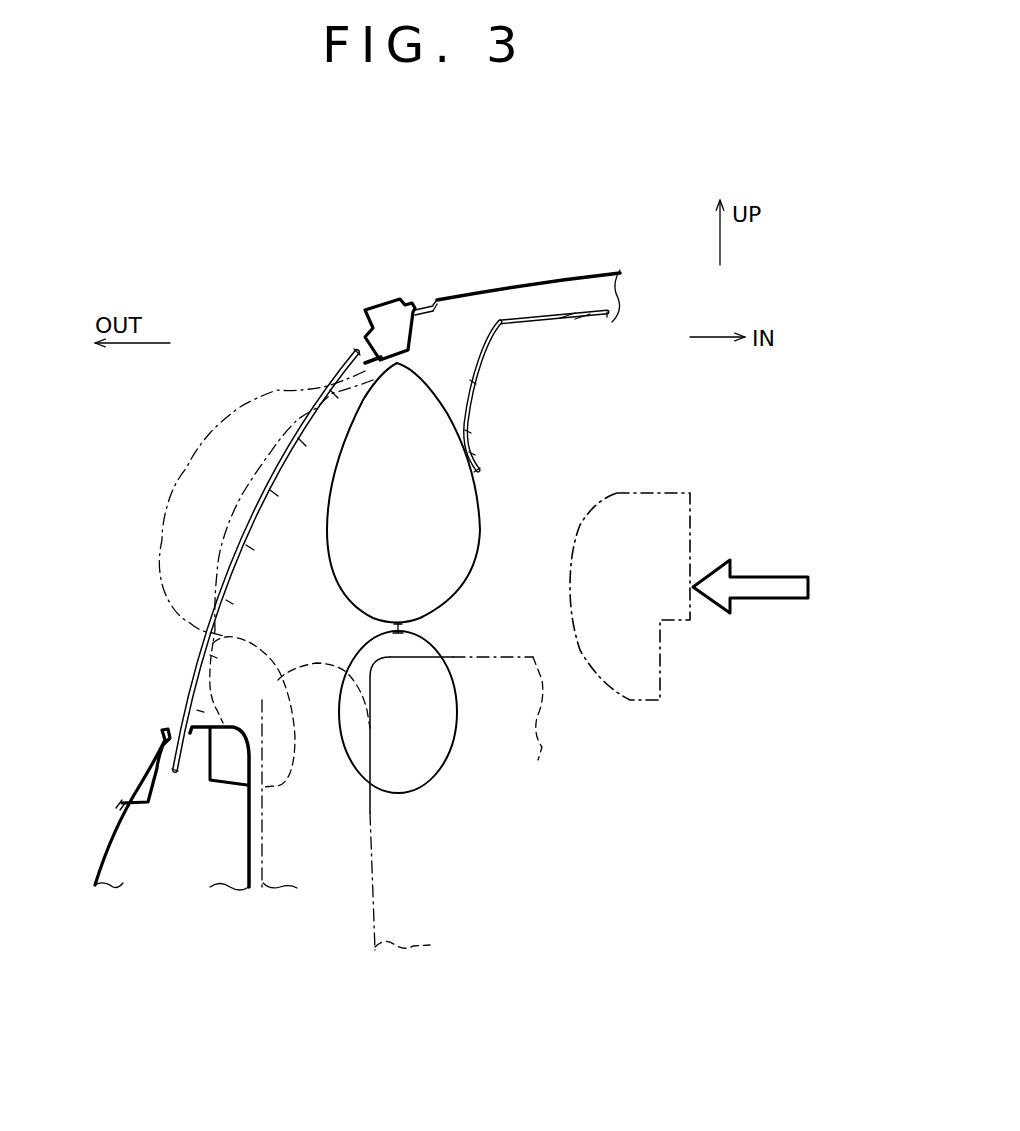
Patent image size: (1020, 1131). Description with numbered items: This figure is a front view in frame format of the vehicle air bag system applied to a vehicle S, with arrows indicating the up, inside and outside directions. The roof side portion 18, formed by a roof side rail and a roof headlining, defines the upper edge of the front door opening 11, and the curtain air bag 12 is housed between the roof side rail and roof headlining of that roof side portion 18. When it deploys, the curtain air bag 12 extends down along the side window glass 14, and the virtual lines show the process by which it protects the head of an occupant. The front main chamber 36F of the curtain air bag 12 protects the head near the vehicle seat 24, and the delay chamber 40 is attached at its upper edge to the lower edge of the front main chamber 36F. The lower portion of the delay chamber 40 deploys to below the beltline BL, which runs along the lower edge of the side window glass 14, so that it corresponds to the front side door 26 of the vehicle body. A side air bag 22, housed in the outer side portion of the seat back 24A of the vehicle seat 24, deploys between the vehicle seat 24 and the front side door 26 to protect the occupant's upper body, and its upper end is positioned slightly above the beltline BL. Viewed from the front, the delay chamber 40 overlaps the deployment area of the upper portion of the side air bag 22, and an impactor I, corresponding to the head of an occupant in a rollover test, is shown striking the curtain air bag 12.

The vehicle S is at (560, 258).
The front door opening 11 is at (362, 347).
The curtain air bag 12 is at (487, 498).
The side window glass 14 is at (343, 364).
The roof side portion 18 is at (441, 336).
The side air bag 22 is at (347, 848).
The vehicle seat 24 is at (371, 893).
The seat back 24A is at (500, 677).
The front side door 26 is at (99, 833).
The front main chamber 36F is at (185, 464).
The delay chamber 40 is at (440, 738).
The beltline BL is at (170, 723).
The impactor I is at (632, 702).